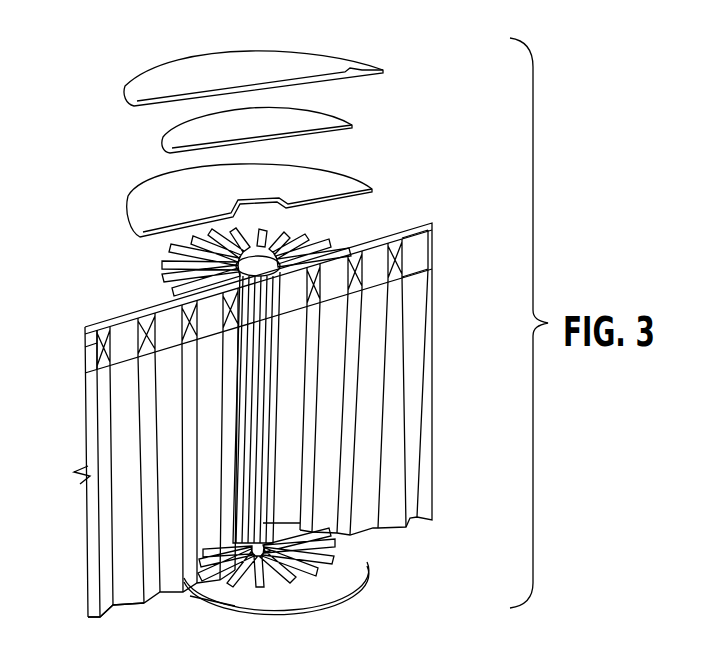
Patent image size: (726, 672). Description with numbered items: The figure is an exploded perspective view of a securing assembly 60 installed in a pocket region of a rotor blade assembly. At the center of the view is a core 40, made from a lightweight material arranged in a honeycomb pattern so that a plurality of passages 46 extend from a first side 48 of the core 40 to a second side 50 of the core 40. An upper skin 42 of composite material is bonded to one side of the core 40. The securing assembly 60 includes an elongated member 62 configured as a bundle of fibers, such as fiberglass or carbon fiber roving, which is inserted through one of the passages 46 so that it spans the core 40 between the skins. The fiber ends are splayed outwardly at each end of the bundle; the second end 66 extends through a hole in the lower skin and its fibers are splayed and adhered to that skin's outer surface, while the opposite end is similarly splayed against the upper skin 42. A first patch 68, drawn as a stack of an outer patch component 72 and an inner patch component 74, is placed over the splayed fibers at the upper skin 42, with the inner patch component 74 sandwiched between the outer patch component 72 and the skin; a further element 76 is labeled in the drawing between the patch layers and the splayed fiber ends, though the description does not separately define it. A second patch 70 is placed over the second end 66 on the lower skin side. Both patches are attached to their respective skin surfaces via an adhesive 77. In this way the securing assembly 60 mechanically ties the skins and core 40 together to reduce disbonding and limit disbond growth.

The securing assembly 60 is at (233, 27).
The outer patch component 72 is at (150, 78).
The inner patch component 74 is at (180, 138).
The third cover plate / radial fins 76 is at (143, 202).
The first patch 68 is at (405, 105).
The upper skin 42 is at (405, 211).
The passage 46 is at (413, 260).
The first side 48 is at (83, 345).
The core 40 is at (107, 488).
The second side 50 is at (113, 607).
The elongated member 62 is at (253, 418).
The second end 66 is at (340, 556).
The second patch 70 is at (303, 607).
The adhesive 77 is at (232, 597).